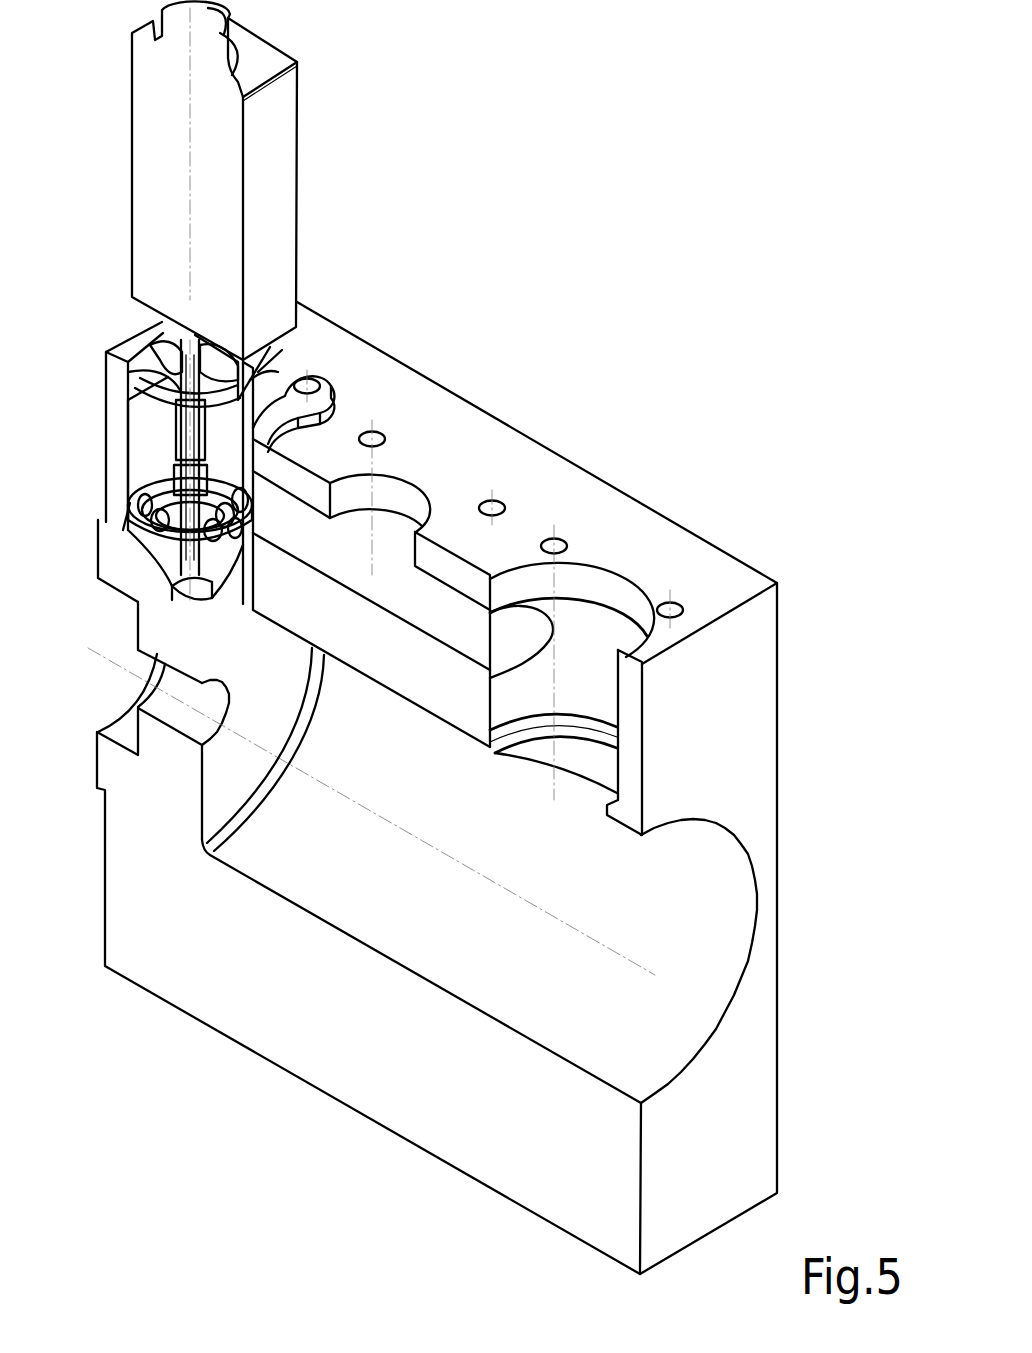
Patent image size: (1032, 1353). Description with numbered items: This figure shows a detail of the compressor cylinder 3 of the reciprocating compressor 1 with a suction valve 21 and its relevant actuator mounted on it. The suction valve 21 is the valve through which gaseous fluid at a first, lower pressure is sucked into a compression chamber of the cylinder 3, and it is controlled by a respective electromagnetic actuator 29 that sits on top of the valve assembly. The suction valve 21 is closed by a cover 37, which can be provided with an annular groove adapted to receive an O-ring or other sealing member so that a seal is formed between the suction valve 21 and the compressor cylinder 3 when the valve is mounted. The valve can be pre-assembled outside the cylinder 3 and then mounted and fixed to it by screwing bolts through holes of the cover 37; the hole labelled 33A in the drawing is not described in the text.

The reciprocating compressor 1 is at (610, 480).
The cylinder 3 is at (732, 848).
The suction valve 21 is at (140, 444).
The electromagnetic actuator 29 is at (282, 205).
The cover 37 is at (284, 380).
The mounting hole 33A is at (309, 383).